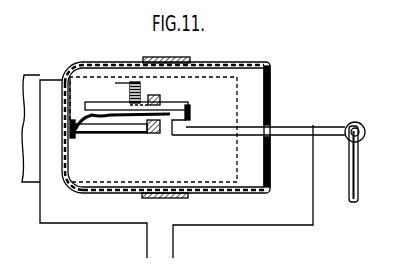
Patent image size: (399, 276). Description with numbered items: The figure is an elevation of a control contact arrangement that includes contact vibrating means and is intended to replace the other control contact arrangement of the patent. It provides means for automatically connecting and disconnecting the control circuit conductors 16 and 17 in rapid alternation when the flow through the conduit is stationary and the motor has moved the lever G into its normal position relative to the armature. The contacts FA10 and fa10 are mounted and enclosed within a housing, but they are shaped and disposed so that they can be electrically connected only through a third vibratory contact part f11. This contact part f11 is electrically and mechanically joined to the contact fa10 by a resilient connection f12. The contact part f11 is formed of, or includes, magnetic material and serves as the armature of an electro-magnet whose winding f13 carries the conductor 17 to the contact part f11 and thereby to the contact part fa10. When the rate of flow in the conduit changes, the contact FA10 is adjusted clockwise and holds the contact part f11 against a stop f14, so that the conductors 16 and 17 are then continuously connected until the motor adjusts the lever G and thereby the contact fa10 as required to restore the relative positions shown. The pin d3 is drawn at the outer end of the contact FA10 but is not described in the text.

The lever G is at (35, 182).
The control circuit conductor 17 is at (96, 224).
The control circuit conductor 16 is at (226, 224).
The resilient connection f12 is at (77, 114).
The winding f13 is at (130, 90).
The stop f14 is at (150, 94).
The vibratory contact part f11 is at (189, 108).
The contact fa10 is at (127, 131).
The contact FA10 is at (207, 131).
The pin d3 is at (358, 177).